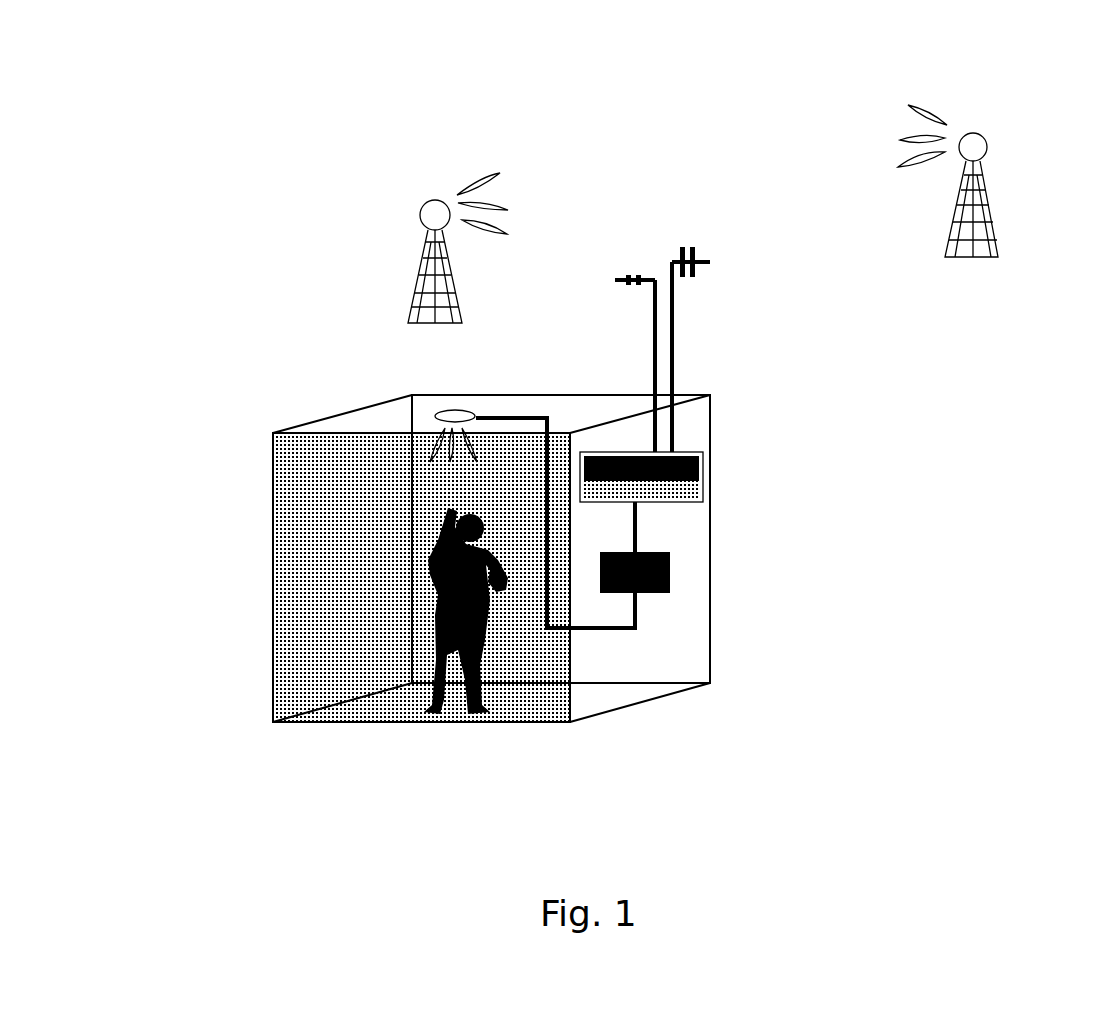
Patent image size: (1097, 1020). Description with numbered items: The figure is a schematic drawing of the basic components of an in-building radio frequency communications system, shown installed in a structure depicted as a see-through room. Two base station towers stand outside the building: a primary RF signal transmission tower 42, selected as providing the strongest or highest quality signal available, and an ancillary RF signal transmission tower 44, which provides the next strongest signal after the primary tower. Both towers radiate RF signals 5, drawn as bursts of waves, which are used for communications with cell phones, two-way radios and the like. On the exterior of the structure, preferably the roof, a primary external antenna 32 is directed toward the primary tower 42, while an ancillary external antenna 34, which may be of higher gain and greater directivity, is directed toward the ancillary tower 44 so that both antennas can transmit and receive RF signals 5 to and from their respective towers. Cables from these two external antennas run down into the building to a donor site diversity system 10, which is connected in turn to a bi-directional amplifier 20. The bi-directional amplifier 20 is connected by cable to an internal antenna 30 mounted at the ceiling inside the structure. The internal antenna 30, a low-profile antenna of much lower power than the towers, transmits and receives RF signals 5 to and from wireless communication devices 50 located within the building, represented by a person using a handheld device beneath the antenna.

The RF signals 5 is at (470, 167).
The donor site diversity system 10 is at (705, 472).
The bi-directional amplifier 20 is at (672, 574).
The internal antenna 30 is at (433, 408).
The primary external antenna 32 is at (622, 265).
The ancillary external antenna 34 is at (710, 250).
The primary RF signal transmission tower 42 is at (405, 266).
The ancillary RF signal transmission tower 44 is at (1005, 188).
The wireless communication devices 50 is at (438, 522).